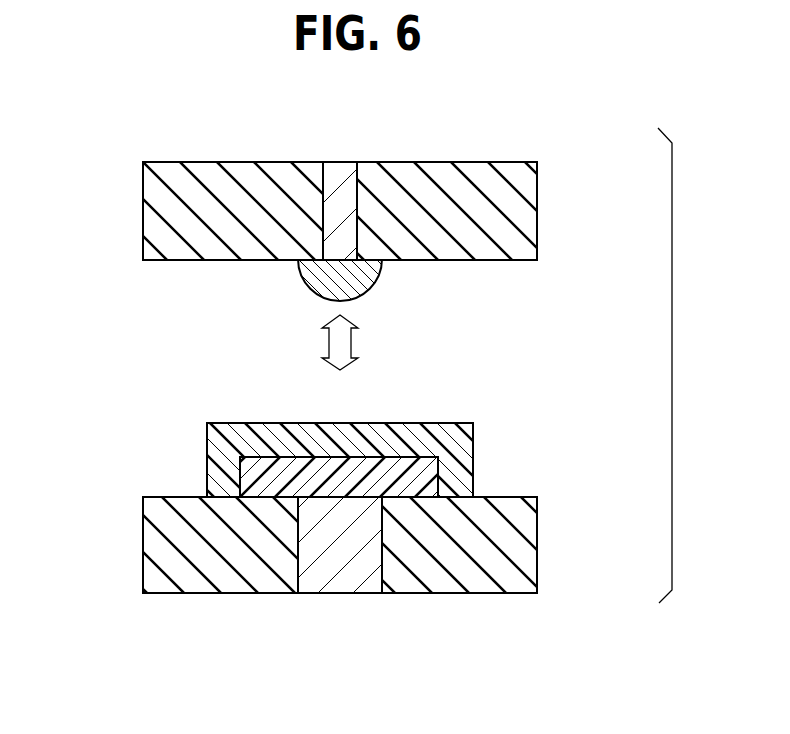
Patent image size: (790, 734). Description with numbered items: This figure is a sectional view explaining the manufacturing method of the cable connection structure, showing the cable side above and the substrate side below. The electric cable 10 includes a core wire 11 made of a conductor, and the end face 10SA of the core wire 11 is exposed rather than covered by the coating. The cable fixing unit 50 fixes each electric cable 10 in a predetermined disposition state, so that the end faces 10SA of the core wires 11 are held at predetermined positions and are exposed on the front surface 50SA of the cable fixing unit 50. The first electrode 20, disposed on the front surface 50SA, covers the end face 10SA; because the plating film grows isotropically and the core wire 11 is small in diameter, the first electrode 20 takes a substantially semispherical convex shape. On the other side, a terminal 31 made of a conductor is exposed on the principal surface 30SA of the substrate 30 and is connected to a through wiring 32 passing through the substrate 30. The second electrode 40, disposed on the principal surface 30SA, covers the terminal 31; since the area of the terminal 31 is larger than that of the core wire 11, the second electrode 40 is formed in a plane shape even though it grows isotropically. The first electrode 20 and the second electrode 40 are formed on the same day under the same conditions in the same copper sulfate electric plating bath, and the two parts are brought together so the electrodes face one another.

The cable fixing unit 50 is at (540, 185).
The core wire 11 is at (347, 162).
The electric cable 10 is at (340, 186).
The first electrode 20 is at (380, 278).
The front surface 50SA is at (177, 261).
The end face 10SA is at (337, 261).
The second electrode 40 is at (207, 452).
The terminal 31 is at (440, 480).
The substrate 30 is at (540, 533).
The through wiring 32 is at (355, 597).
The principal surface 30SA is at (180, 496).